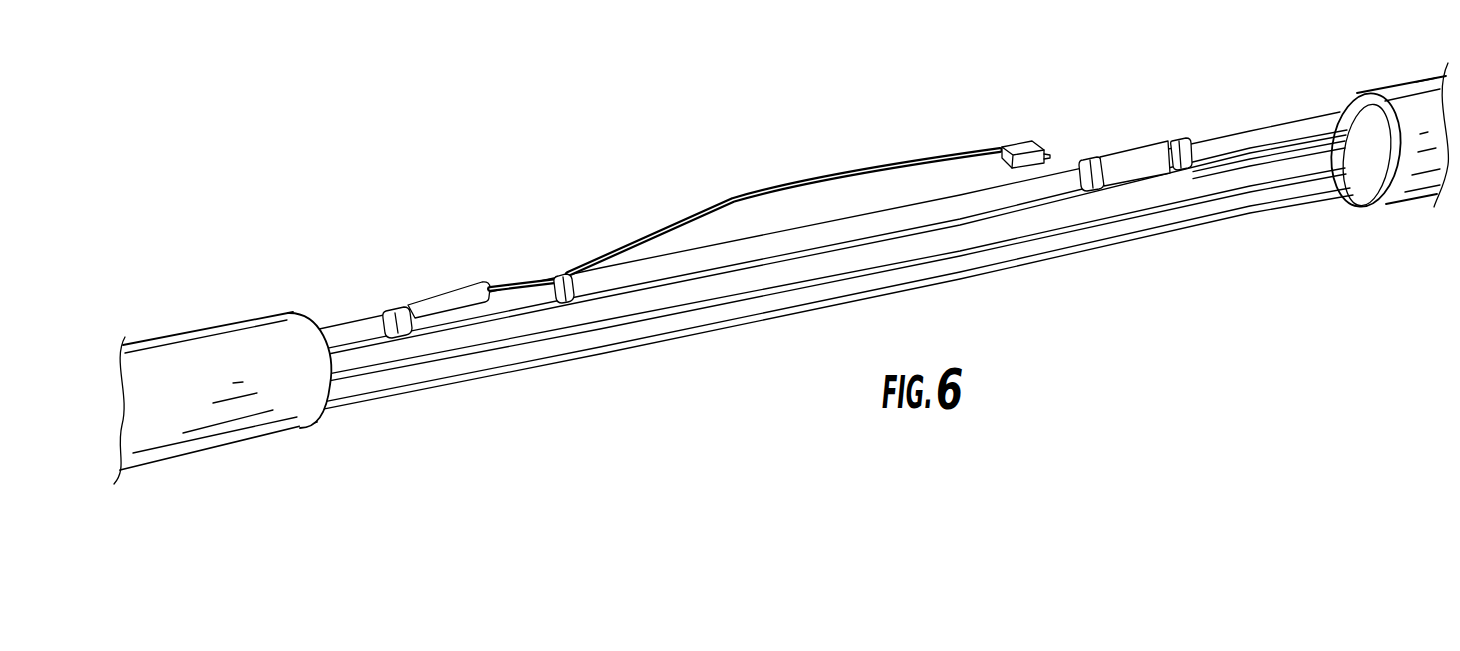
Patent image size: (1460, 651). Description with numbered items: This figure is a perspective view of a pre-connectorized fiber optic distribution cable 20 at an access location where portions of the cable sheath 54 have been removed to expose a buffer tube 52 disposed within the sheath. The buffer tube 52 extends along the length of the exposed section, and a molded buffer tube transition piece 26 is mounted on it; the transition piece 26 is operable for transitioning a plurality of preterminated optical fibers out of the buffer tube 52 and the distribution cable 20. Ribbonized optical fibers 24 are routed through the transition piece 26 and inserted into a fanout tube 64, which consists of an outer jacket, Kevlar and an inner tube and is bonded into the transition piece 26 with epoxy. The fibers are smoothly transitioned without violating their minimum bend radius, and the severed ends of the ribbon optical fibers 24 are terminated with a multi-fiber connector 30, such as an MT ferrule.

The fiber optic distribution cable 20 is at (255, 337).
The ribbonized optical fibers 24 is at (733, 198).
The buffer tube transition piece 26 is at (445, 295).
The multi-fiber connector 30 is at (1025, 143).
The buffer tube 52 is at (338, 323).
The cable sheath 54 is at (300, 393).
The fanout tube 64 is at (538, 275).